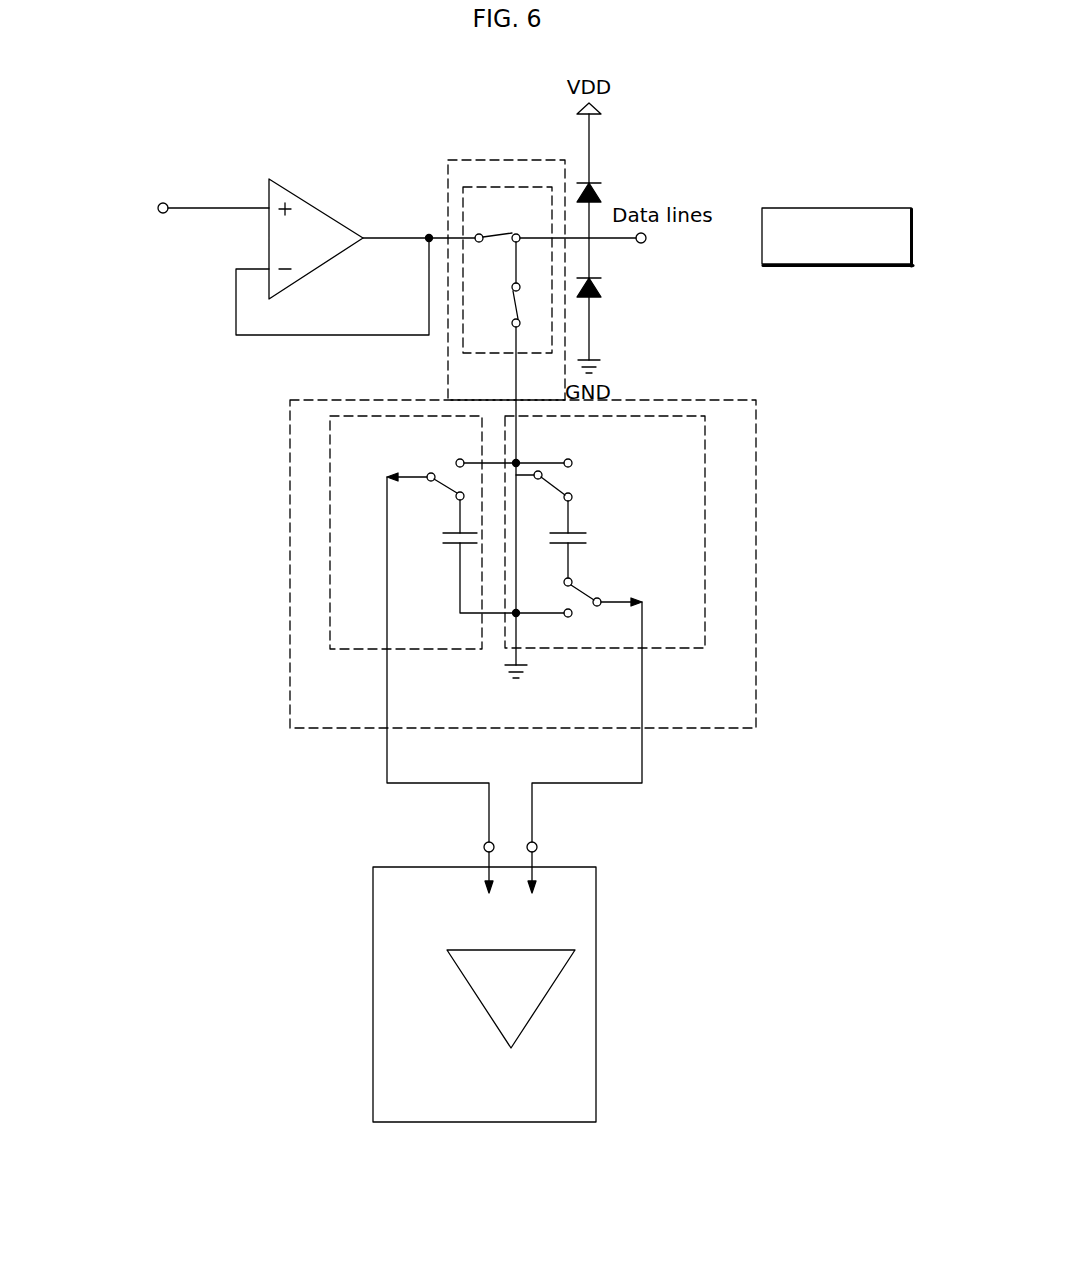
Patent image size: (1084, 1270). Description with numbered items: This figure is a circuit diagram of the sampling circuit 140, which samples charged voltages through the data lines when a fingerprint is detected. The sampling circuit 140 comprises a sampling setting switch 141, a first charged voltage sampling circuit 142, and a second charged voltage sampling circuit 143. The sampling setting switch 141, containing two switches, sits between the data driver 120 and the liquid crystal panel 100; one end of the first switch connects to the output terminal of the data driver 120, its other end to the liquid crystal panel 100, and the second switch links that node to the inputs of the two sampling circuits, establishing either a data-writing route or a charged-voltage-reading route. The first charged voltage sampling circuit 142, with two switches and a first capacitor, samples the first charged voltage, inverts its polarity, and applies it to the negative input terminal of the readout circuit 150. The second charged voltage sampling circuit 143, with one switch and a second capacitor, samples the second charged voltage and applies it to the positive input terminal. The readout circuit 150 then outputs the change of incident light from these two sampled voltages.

The liquid crystal panel 100 is at (835, 207).
The data driver 120 is at (289, 182).
The sampling circuit 140 is at (736, 400).
The sampling setting switch 141 is at (500, 187).
The first charged voltage sampling circuit 142 is at (683, 416).
The second charged voltage sampling circuit 143 is at (365, 416).
The readout circuit 150 is at (596, 915).